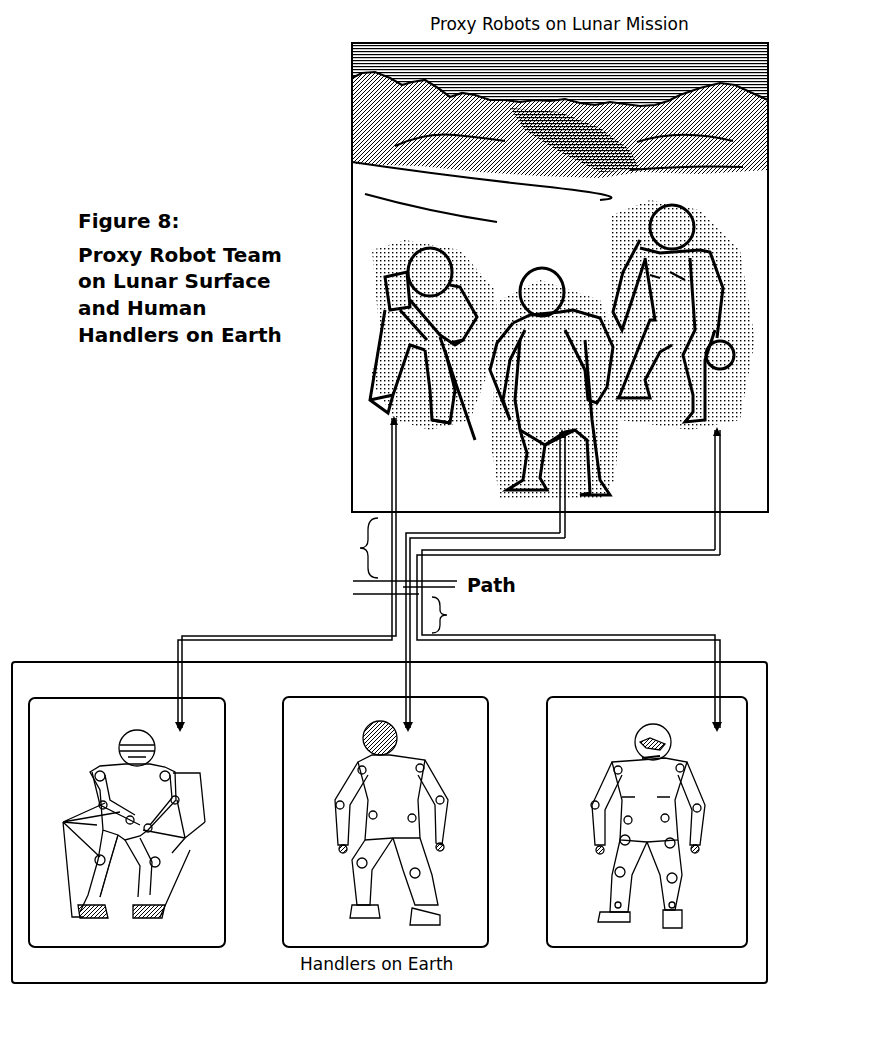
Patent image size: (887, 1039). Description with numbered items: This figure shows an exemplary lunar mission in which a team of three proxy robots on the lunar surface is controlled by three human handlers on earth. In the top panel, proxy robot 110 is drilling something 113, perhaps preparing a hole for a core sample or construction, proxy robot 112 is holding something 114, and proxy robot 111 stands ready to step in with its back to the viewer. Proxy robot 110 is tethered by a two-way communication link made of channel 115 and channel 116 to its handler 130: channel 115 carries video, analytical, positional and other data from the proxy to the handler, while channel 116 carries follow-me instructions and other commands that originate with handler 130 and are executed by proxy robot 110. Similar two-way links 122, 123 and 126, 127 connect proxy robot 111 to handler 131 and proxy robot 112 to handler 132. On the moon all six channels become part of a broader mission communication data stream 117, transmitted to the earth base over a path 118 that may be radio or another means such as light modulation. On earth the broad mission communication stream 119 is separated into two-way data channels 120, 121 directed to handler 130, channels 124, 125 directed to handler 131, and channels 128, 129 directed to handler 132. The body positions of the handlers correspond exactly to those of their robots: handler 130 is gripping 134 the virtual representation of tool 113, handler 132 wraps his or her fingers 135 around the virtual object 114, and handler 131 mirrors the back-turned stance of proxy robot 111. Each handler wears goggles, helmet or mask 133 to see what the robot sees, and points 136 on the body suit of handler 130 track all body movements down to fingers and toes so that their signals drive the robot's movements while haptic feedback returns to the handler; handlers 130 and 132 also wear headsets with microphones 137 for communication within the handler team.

The proxy robot 110 is at (426, 260).
The proxy robot 111 is at (554, 277).
The proxy robot 112 is at (650, 218).
The something being drilled (tool) 113 is at (462, 438).
The something being held 114 is at (728, 347).
The channel 115 is at (386, 452).
The channel 116 is at (403, 492).
The mission communication data stream 117 is at (358, 550).
The path 118 is at (353, 589).
The broad mission communication stream 119 is at (452, 616).
The two-way data channel 120 is at (170, 681).
The two-way data channel 121 is at (190, 652).
The two-way communications and data link channel 122 is at (555, 525).
The two-way communications and data link channel 123 is at (569, 525).
The two-way data channel 124 is at (404, 675).
The two-way data channel 125 is at (415, 650).
The two-way communications and data link channel 126 is at (712, 531).
The two-way communications and data link channel 127 is at (724, 531).
The two-way data channel 128 is at (712, 681).
The two-way data channel 129 is at (650, 632).
The human handler 130 is at (126, 735).
The human handler 131 is at (363, 731).
The human handler 132 is at (640, 735).
The goggles, helmet or mask 133 is at (148, 749).
The gripping 134 is at (137, 845).
The fingers 135 is at (699, 853).
The points 136 is at (185, 840).
The headset 137 is at (678, 755).